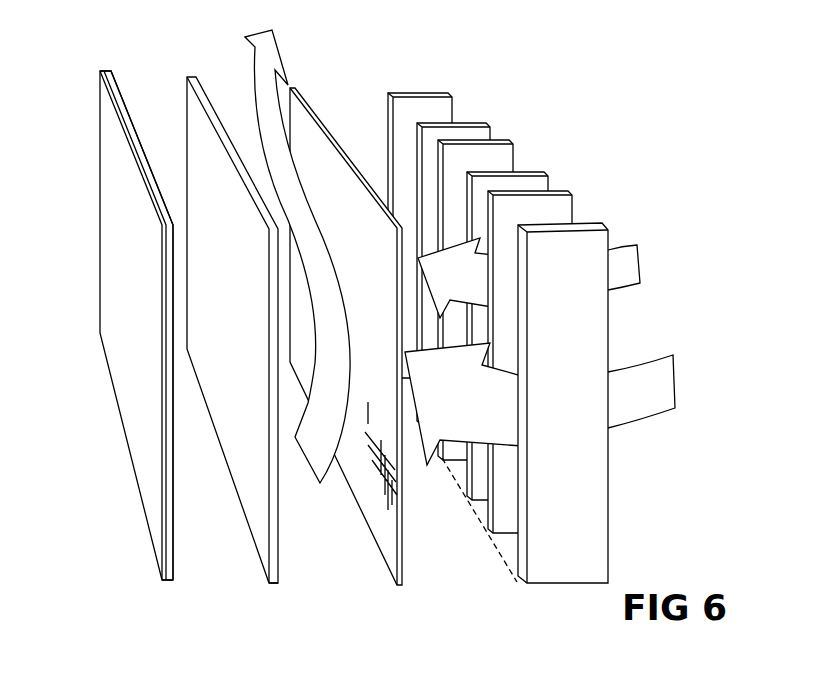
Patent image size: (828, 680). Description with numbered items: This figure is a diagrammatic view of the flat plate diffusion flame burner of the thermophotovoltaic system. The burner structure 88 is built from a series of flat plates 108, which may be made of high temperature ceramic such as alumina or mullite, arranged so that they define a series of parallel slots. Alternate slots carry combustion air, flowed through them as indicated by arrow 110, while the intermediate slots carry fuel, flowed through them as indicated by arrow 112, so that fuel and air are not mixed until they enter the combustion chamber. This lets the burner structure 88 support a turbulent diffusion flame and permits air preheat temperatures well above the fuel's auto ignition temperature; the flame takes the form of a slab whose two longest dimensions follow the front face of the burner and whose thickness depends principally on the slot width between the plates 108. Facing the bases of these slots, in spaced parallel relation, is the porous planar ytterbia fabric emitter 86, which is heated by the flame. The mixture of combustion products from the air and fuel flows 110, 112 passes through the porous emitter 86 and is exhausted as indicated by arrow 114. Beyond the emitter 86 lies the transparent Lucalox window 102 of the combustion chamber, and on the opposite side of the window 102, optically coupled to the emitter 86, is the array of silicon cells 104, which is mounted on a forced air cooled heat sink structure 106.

The porous planar ytterbia fabric emitter 86 is at (305, 100).
The burner structure 88 is at (415, 86).
The transparent Lucalox window 102 is at (188, 77).
The array of silicon cells 104 is at (118, 81).
The forced air cooled heat sink structure 106 is at (100, 82).
The flat plates 108 is at (453, 95).
The arrow (air flow) 110 is at (661, 363).
The arrow (fuel flow) 112 is at (634, 246).
The arrow (exhaust flow) 114 is at (278, 43).